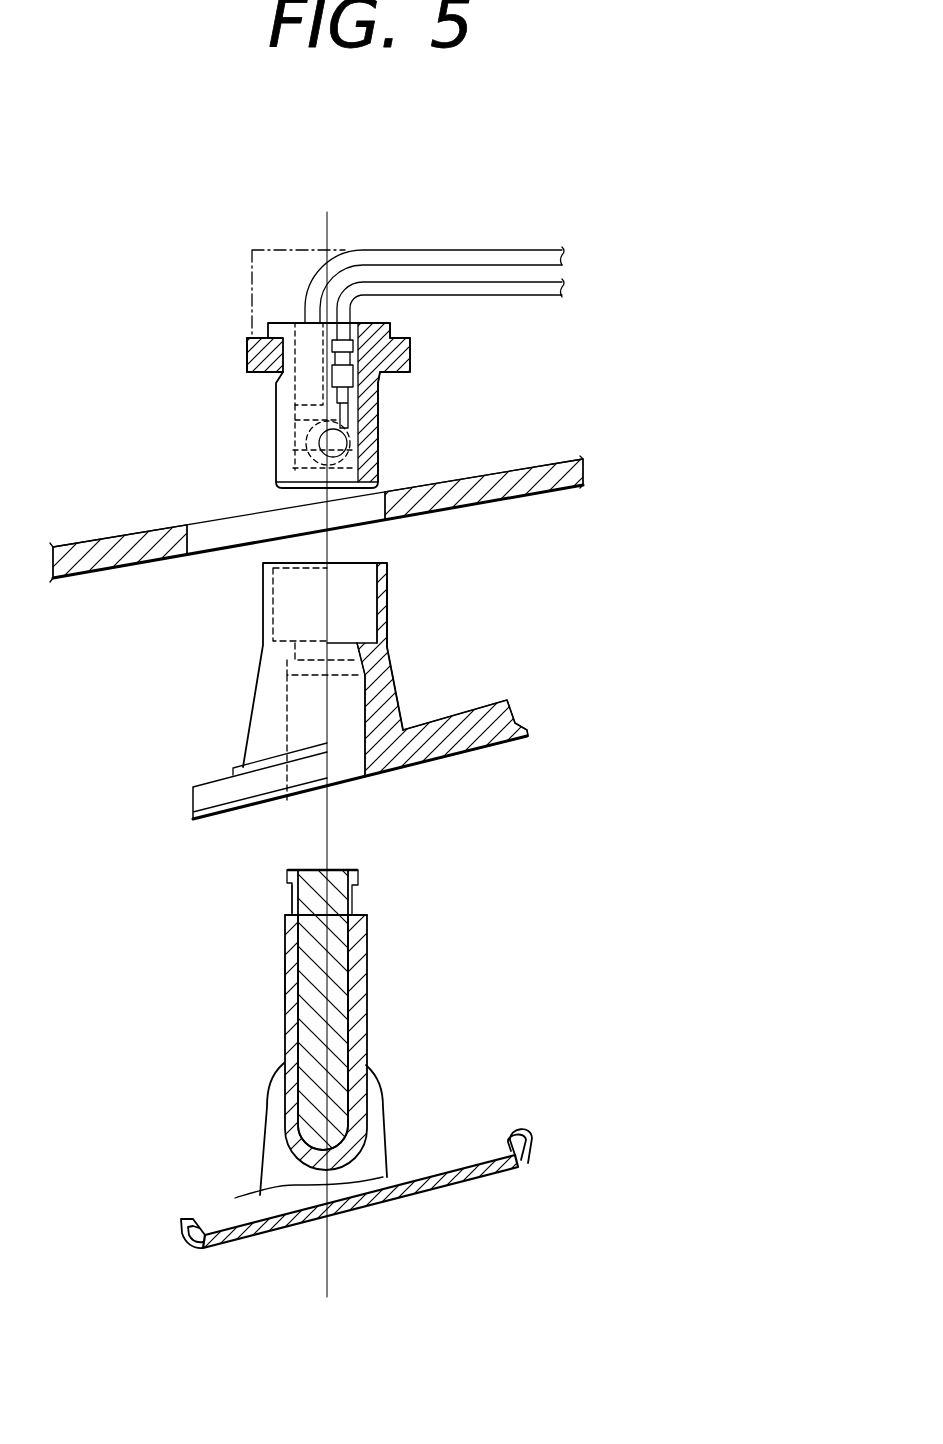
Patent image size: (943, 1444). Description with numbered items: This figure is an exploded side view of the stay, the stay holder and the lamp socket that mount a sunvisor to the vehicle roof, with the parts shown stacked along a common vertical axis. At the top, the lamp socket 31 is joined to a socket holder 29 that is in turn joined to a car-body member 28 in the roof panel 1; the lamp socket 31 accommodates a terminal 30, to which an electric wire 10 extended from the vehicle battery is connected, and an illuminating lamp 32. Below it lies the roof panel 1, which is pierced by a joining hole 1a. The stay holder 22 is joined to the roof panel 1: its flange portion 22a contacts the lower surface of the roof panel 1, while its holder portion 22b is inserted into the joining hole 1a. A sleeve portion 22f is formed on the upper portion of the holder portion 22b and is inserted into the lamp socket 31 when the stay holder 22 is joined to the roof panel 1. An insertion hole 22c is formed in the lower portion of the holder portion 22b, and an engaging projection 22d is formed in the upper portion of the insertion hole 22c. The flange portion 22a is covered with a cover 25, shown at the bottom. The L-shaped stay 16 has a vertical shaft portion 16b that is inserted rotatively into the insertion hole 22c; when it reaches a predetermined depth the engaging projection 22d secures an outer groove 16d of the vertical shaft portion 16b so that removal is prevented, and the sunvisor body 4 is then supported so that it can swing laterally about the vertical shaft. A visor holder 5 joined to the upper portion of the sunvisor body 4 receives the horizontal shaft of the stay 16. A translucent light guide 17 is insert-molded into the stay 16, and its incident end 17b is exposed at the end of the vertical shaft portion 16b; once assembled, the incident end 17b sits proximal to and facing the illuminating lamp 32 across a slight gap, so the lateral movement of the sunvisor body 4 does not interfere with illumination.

The roof panel 1 is at (530, 487).
The joining hole 1a is at (223, 533).
The sunvisor body 4 is at (267, 1130).
The visor holder 5 is at (384, 1080).
The electric wire 10 is at (513, 283).
The stay 16 is at (368, 947).
The vertical shaft portion 16b is at (285, 988).
The outer groove 16d is at (290, 895).
The light guide 17 is at (335, 1003).
The incident end 17b is at (342, 868).
The stay holder 22 is at (248, 720).
The flange portion 22a is at (485, 725).
The holder portion 22b is at (383, 612).
The insertion hole 22c is at (338, 757).
The engaging projection 22d is at (361, 655).
The sleeve portion 22f is at (388, 583).
The cover 25 is at (397, 1198).
The car-body member 28 is at (303, 250).
The socket holder 29 is at (247, 348).
The terminal 30 is at (386, 323).
The lamp socket 31 is at (380, 447).
The illuminating lamp 32 is at (318, 450).